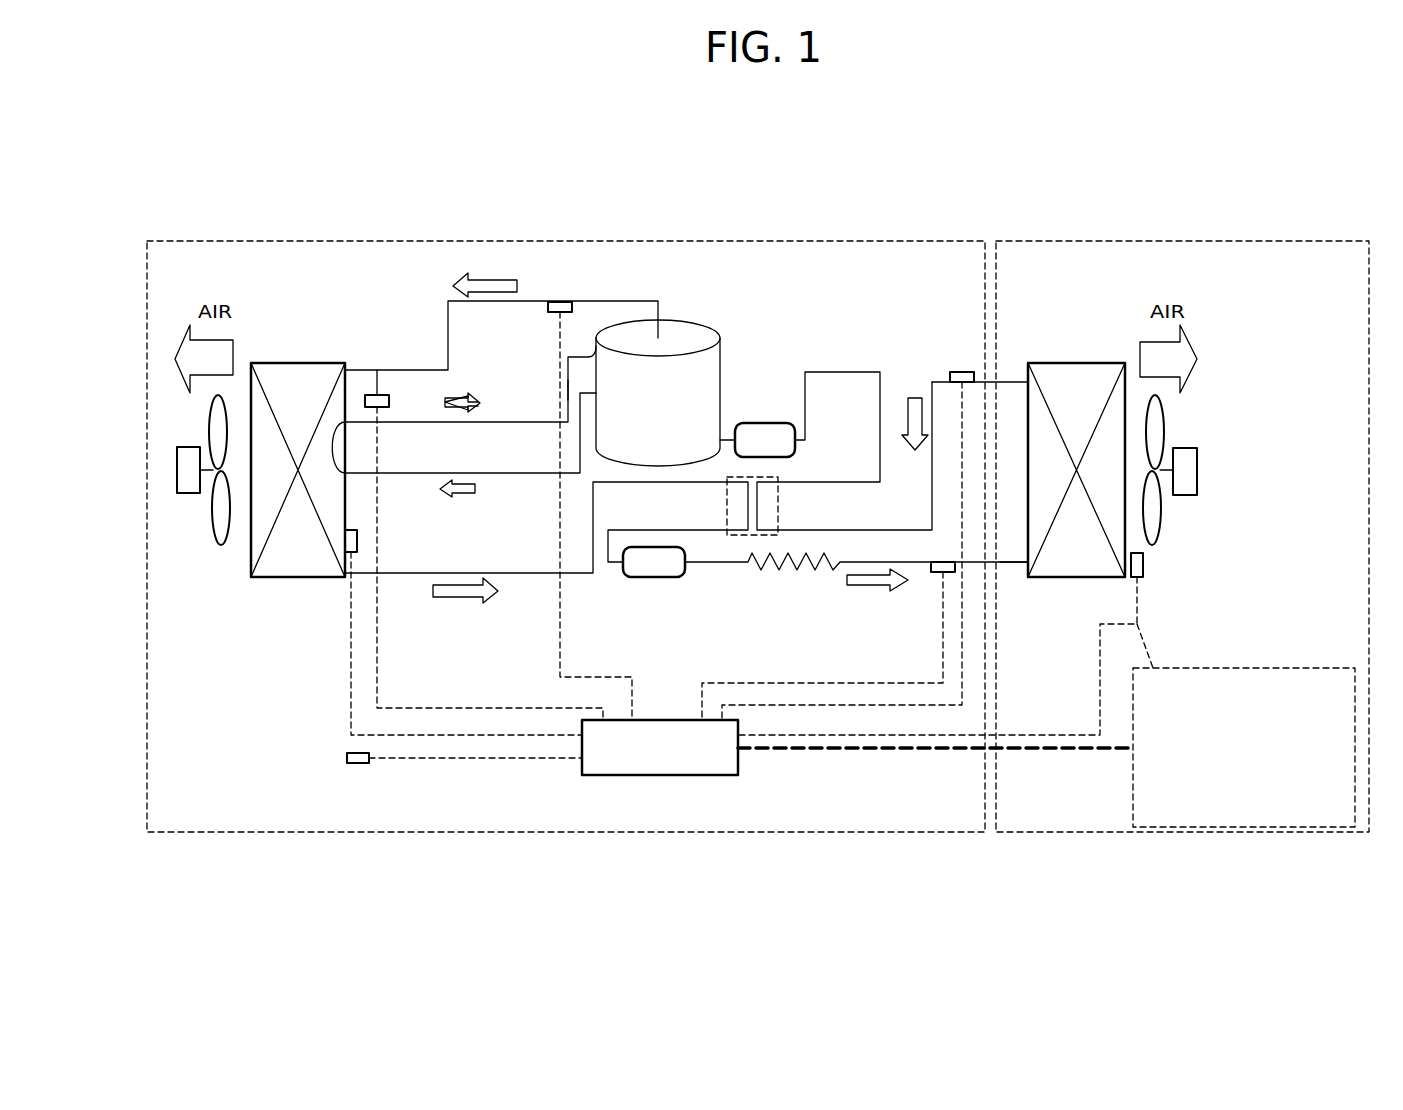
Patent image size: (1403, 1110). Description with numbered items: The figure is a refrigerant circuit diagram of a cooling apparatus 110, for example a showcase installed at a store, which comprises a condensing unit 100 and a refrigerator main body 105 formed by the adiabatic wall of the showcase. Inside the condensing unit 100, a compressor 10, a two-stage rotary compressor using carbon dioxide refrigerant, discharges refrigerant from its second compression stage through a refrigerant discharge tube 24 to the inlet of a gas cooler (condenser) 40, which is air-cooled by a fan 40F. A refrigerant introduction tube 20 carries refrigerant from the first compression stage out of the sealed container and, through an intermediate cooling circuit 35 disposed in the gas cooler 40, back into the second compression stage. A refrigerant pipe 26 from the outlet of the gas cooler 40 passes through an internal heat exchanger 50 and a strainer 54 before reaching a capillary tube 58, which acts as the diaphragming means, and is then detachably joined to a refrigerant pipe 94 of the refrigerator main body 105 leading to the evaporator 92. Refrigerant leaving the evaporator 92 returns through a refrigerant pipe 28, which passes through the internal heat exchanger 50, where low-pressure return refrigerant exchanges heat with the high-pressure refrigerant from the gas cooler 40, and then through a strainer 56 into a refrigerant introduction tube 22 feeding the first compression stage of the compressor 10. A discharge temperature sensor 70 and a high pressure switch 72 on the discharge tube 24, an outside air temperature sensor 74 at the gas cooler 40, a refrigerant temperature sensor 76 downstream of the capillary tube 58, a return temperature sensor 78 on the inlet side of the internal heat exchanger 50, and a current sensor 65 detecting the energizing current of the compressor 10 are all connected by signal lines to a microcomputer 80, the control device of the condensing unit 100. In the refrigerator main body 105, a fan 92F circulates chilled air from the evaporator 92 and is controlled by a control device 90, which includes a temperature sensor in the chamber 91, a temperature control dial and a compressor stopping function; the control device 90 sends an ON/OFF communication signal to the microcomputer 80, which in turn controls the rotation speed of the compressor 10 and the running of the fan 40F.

The compressor 10 is at (690, 318).
The refrigerant introduction tube 20 is at (578, 356).
The refrigerant introduction tube 22 is at (724, 440).
The refrigerant discharge tube 24 is at (448, 315).
The refrigerant pipe 26 is at (412, 573).
The refrigerant pipe 28 is at (822, 372).
The intermediate cooling circuit 35 is at (493, 412).
The gas cooler (condenser) 40 is at (265, 578).
The fan 40F is at (182, 493).
The internal heat exchanger 50 is at (808, 478).
The strainer 54 is at (628, 578).
The strainer 56 is at (770, 420).
The capillary tube 58 is at (768, 568).
The current sensor 65 is at (355, 764).
The discharge temperature sensor 70 is at (556, 300).
The high pressure switch 72 is at (368, 393).
The outside air temperature sensor 74 is at (357, 540).
The refrigerant temperature sensor 76 is at (942, 573).
The return temperature sensor 78 is at (962, 370).
The microcomputer 80 is at (690, 776).
The control device 90 is at (1318, 668).
The temperature sensor in the chamber 91 is at (1143, 565).
The evaporator 92 is at (1082, 363).
The fan 92F is at (1197, 468).
The refrigerant pipe 94 is at (1012, 562).
The condensing unit 100 is at (775, 241).
The refrigerator main body 105 is at (1237, 241).
The cooling apparatus 110 is at (800, 195).